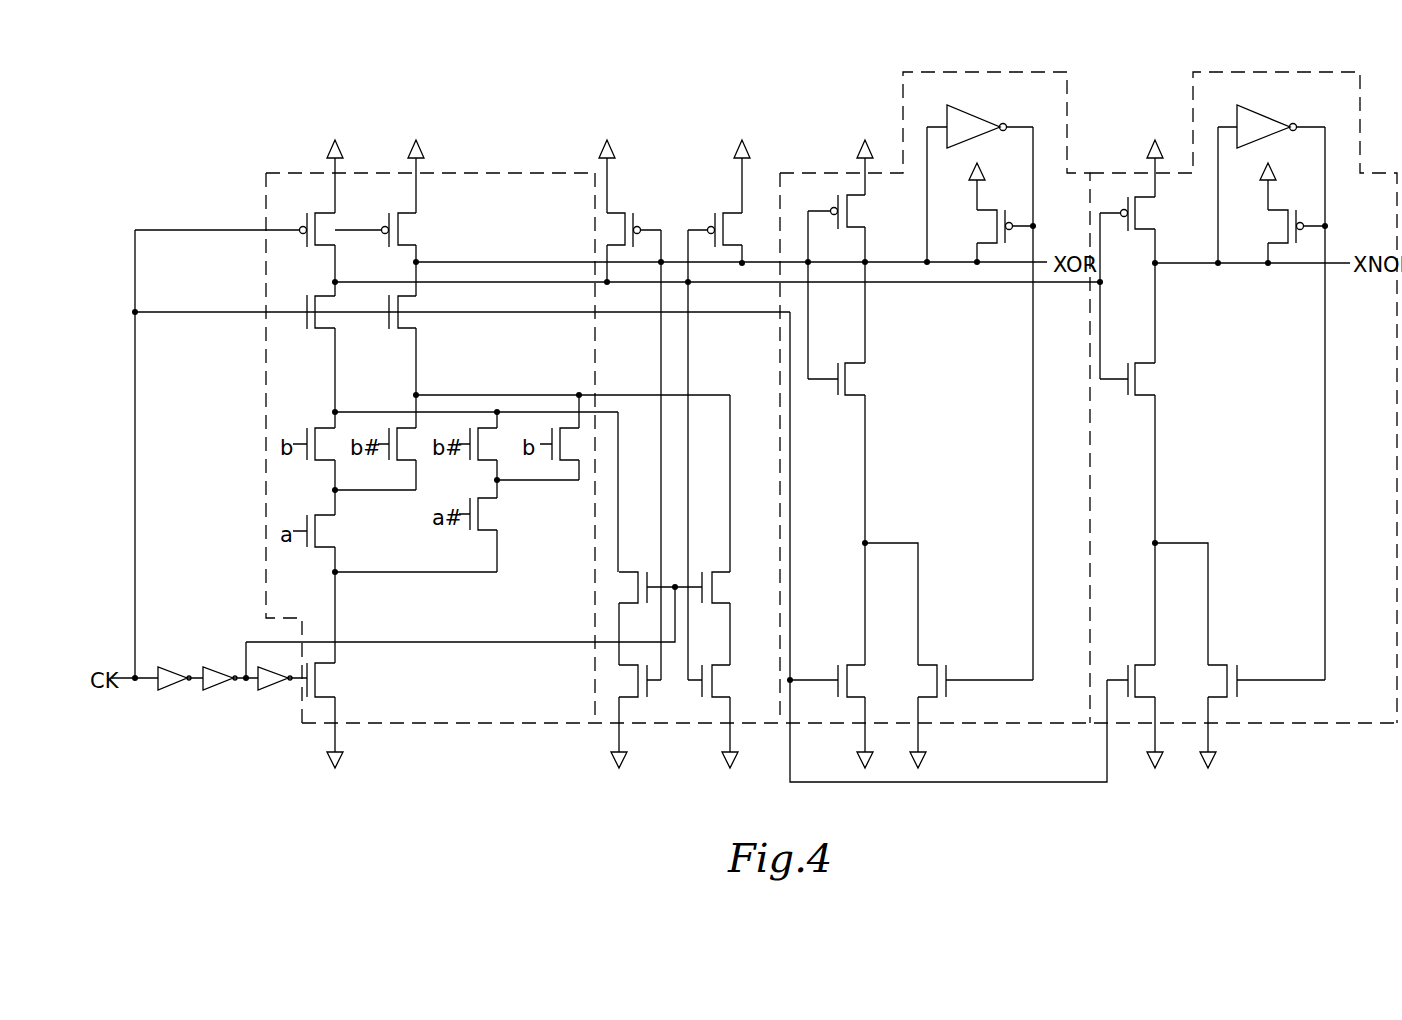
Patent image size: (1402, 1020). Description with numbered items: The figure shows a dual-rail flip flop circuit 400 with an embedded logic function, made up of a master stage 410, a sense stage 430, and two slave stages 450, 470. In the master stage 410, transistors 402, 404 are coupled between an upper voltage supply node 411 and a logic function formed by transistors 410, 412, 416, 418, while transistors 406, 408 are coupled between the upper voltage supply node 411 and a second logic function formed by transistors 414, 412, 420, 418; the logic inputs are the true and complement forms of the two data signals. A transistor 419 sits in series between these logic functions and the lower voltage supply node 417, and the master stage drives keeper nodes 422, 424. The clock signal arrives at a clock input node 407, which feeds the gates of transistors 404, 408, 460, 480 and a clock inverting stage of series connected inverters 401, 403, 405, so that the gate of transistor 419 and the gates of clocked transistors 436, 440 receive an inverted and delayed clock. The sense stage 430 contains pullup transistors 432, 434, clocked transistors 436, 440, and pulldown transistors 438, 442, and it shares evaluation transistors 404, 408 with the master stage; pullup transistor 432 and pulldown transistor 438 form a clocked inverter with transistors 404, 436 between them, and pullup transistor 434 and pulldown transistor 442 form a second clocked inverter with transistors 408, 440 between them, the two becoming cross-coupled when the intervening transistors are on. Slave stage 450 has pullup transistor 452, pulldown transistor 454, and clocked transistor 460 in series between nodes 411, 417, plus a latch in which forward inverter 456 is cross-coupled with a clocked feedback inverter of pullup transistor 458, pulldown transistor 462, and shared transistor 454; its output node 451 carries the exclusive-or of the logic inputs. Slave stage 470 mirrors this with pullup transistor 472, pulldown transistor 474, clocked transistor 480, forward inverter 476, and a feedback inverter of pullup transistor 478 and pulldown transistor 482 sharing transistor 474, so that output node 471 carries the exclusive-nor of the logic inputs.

The flip flop circuit 400 is at (228, 120).
The inverter 401 is at (175, 690).
The inverter 403 is at (223, 690).
The inverter 405 is at (275, 690).
The clock input node 407 is at (118, 675).
The transistor 402 is at (330, 242).
The transistor 404 is at (330, 322).
The transistor 406 is at (420, 224).
The transistor 408 is at (410, 324).
The master stage 410 is at (497, 173).
The upper voltage supply node 411 is at (343, 146).
The transistor 412 is at (322, 531).
The transistor 414 is at (402, 428).
The transistor 416 is at (480, 428).
The lower voltage supply node 417 is at (340, 770).
The transistor 418 is at (488, 513).
The transistor 419 is at (325, 679).
The transistor 420 is at (570, 428).
The keeper node 422 is at (535, 262).
The keeper node 424 is at (550, 283).
The sense stage 430 is at (660, 173).
The pullup transistor 432 is at (615, 233).
The pullup transistor 434 is at (728, 215).
The clocked transistor 436 is at (622, 590).
The pulldown transistor 438 is at (622, 684).
The clocked transistor 440 is at (720, 588).
The pulldown transistor 442 is at (720, 681).
The slave stage 450 is at (815, 173).
The output node 451 is at (955, 265).
The pullup transistor 452 is at (852, 216).
The pulldown transistor 454 is at (852, 381).
The inverter 456 is at (975, 113).
The pullup transistor 458 is at (990, 228).
The clocked transistor 460 is at (853, 665).
The pulldown transistor 462 is at (928, 682).
The slave stage 470 is at (1127, 173).
The output node 471 is at (1240, 265).
The pullup transistor 472 is at (1142, 216).
The pulldown transistor 474 is at (1142, 381).
The inverter 476 is at (1265, 113).
The pullup transistor 478 is at (1280, 228).
The clocked transistor 480 is at (1143, 665).
The pulldown transistor 482 is at (1218, 682).